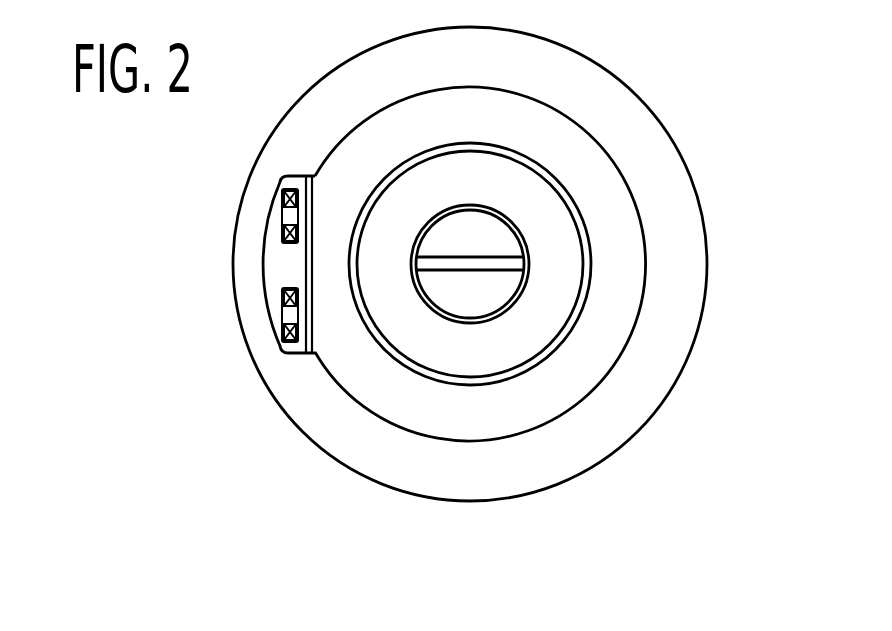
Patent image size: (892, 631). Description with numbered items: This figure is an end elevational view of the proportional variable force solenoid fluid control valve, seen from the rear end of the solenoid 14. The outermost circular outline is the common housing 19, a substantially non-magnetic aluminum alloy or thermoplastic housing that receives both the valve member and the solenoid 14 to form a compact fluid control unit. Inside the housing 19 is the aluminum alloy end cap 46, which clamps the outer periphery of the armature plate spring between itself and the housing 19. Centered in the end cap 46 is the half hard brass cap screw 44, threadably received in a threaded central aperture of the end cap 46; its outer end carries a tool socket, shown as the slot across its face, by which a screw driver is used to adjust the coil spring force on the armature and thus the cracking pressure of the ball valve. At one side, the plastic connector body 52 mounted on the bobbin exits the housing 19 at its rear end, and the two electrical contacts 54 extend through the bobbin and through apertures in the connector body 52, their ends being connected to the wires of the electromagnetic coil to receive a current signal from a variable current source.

The solenoid 14 is at (708, 222).
The housing 19 is at (675, 323).
The end cap 46 is at (588, 362).
The cap screw 44 is at (442, 298).
The connector body 52 is at (278, 266).
The electrical contacts 54 is at (283, 218).